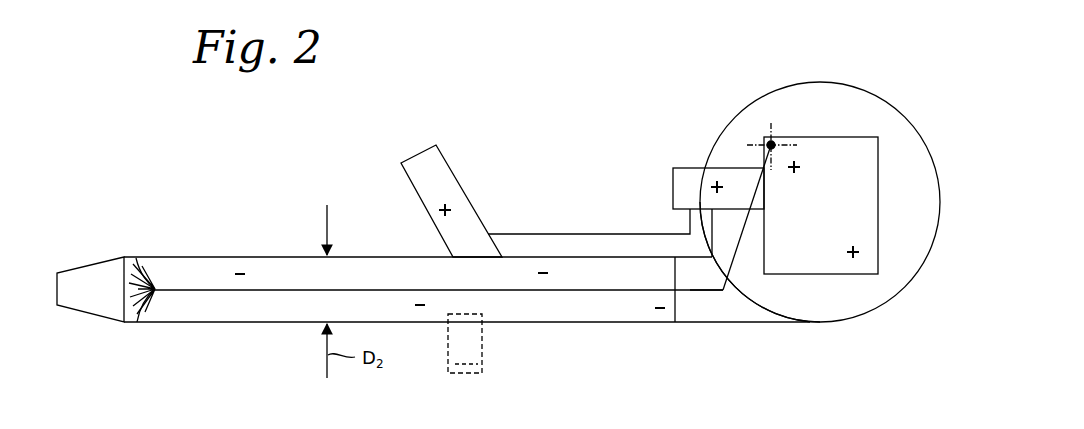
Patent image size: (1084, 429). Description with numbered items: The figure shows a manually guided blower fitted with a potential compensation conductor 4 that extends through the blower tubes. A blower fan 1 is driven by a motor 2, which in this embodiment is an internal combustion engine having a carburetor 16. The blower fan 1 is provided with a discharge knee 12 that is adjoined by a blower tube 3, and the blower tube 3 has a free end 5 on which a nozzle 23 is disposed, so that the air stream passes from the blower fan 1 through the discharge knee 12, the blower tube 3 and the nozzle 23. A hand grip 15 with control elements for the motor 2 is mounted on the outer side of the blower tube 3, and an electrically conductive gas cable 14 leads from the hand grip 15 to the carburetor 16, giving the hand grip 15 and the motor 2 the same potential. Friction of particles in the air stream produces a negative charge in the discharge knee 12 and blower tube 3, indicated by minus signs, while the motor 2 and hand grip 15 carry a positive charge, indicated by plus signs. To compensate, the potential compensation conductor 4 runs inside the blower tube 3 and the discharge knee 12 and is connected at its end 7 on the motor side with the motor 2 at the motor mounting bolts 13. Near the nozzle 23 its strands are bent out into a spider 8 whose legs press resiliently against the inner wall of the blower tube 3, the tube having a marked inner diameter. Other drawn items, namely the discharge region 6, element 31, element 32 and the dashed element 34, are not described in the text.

The blower fan 1 is at (808, 93).
The motor 2 is at (835, 157).
The blower tube 3 is at (230, 257).
The potential compensation conductor 4 is at (258, 291).
The free end 5 is at (138, 238).
The discharge region 6 is at (164, 276).
The end on the motor side 7 is at (777, 121).
The spider 8 is at (137, 320).
The discharge knee 12 is at (753, 298).
The motor mounting bolts 13 is at (763, 138).
The gas cable 14 is at (548, 234).
The hand grip 15 is at (451, 187).
The carburetor 16 is at (687, 175).
The nozzle 23 is at (93, 272).
The inner conductor end 31 is at (692, 290).
The tube end 32 is at (672, 314).
The sensor 34 is at (465, 343).